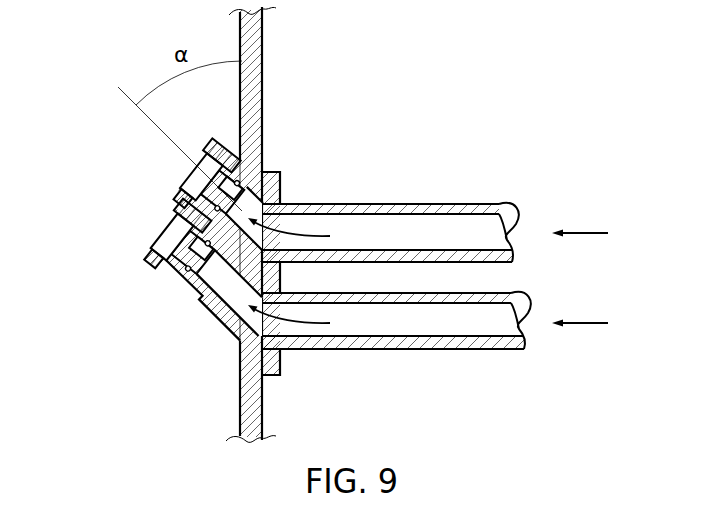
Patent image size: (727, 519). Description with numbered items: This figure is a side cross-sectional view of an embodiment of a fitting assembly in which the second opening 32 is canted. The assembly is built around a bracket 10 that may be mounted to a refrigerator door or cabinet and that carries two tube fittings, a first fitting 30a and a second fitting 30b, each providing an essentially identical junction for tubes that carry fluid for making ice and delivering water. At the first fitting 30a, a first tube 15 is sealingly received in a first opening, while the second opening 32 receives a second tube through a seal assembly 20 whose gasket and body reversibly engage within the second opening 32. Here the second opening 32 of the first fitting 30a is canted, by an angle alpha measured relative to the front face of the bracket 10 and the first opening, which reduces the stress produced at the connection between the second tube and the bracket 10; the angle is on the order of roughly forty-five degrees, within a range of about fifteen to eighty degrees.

The bracket 10 is at (252, 86).
The first tube 15 is at (405, 204).
The seal assembly 20 is at (178, 165).
The first fitting 30a is at (265, 182).
The second fitting 30b is at (190, 297).
The second opening 32 is at (228, 144).